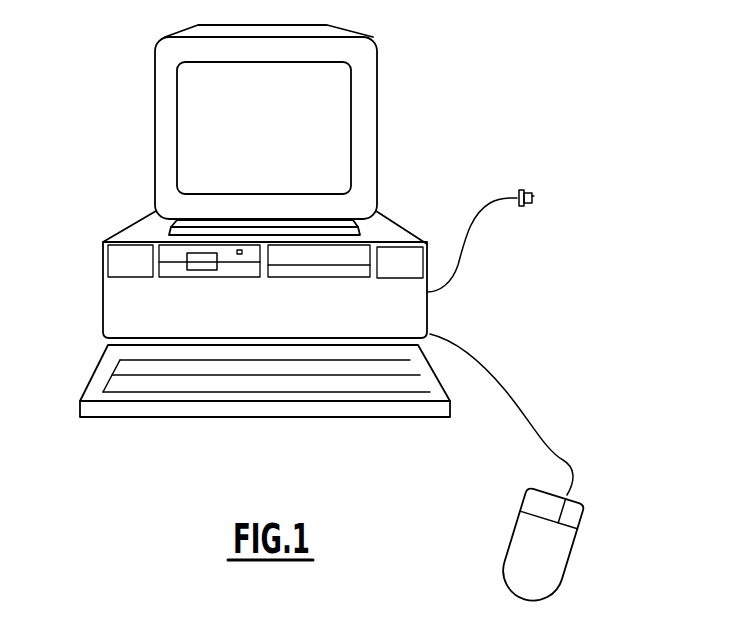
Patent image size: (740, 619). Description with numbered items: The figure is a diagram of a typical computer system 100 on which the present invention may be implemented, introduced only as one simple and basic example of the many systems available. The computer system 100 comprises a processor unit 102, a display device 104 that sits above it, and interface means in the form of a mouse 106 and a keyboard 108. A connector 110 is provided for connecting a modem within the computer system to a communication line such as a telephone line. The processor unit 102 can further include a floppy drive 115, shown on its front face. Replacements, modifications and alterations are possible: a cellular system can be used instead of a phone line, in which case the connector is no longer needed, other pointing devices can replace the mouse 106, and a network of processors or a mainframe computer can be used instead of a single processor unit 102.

The computer system 100 is at (612, 260).
The processor unit 102 is at (110, 293).
The display device 104 is at (155, 123).
The mouse 106 is at (567, 557).
The keyboard 108 is at (167, 413).
The connector 110 is at (530, 188).
The floppy drive 115 is at (203, 268).